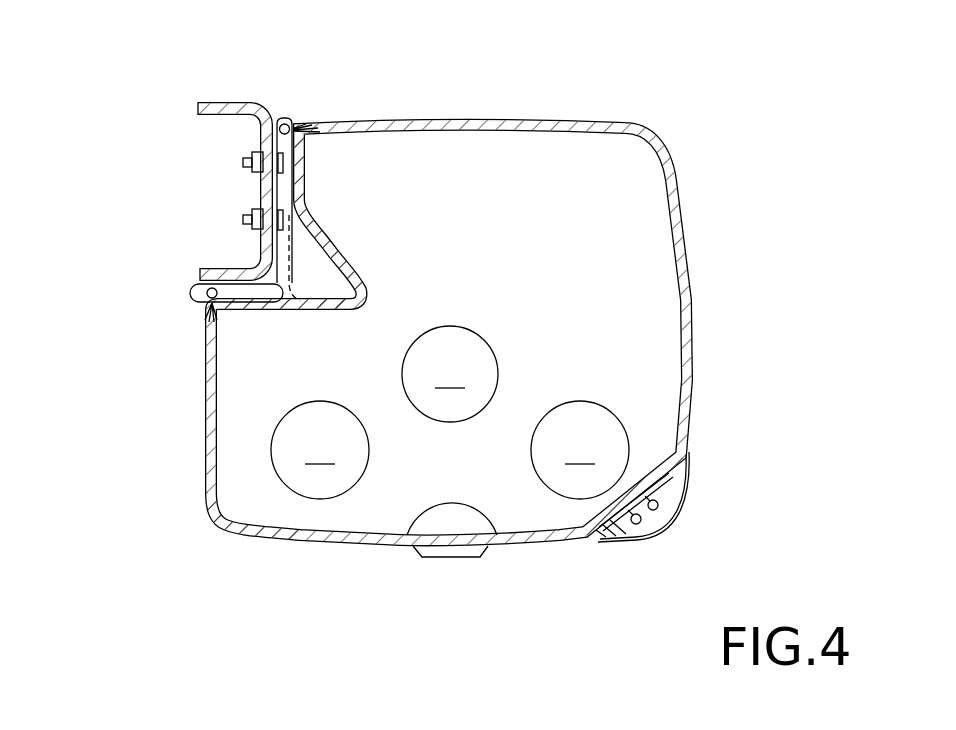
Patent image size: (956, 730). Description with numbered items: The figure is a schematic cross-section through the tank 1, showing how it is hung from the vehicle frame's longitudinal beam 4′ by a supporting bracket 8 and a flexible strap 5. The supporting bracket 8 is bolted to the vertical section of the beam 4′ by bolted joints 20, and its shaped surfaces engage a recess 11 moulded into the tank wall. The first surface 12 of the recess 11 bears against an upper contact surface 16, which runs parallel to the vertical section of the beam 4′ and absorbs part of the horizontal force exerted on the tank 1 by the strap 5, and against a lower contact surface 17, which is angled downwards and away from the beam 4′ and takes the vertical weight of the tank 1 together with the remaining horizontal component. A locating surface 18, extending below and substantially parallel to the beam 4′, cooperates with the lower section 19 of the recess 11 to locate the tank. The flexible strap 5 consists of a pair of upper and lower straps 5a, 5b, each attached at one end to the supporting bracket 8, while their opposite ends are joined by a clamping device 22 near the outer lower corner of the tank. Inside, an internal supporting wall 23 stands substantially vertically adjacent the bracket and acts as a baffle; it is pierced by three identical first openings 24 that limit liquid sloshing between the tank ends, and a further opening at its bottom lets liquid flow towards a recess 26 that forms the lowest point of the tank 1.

The tank 1 is at (568, 81).
The longitudinal beam 4′ is at (208, 102).
The flexible strap 5 is at (672, 131).
The upper strap 5a is at (682, 482).
The lower strap 5b is at (608, 539).
The supporting bracket 8 is at (279, 106).
The recess 11 is at (351, 316).
The first surface 12 is at (300, 232).
The upper contact surface 16 is at (306, 144).
The lower contact surface 17 is at (357, 257).
The locating surface 18 is at (291, 313).
The lower section of the recess 19 is at (278, 292).
The bolted joints 20 is at (243, 220).
The clamping device 22 is at (661, 541).
The internal supporting wall 23 is at (245, 496).
The first openings 24 is at (450, 412).
The recess forming the lowest point 26 is at (452, 557).